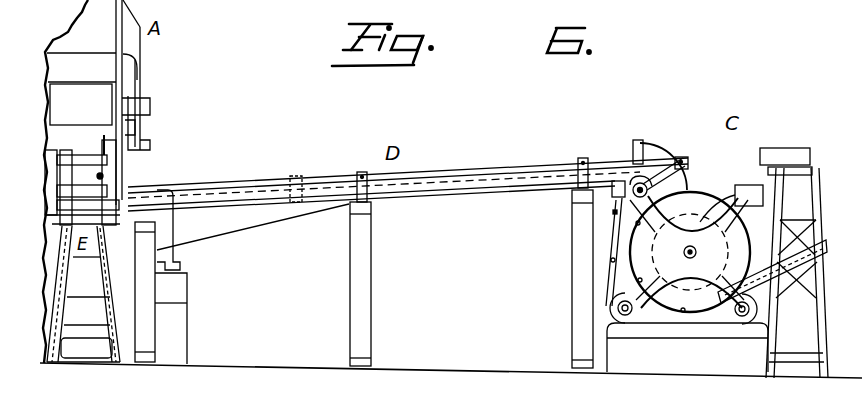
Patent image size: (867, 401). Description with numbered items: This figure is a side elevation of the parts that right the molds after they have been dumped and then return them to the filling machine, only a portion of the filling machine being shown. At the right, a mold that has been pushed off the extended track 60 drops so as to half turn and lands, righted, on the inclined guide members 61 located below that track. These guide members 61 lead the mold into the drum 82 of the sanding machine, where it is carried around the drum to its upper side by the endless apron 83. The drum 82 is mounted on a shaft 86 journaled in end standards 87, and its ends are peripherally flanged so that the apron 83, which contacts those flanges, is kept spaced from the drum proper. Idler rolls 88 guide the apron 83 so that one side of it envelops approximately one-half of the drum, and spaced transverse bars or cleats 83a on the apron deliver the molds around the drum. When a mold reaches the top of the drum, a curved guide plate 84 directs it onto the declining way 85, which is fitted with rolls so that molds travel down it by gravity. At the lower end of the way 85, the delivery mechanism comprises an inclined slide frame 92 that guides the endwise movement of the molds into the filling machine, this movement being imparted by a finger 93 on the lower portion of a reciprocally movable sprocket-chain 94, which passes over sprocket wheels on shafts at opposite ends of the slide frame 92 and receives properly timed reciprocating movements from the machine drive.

The track 60 is at (806, 182).
The inclined guide members 61 is at (778, 280).
The drum 82 is at (703, 208).
The endless apron 83 is at (615, 277).
The bars or cleats 83a is at (712, 333).
The curved guide plate 84 is at (673, 157).
The declining way 85 is at (485, 176).
The shaft 86 is at (690, 258).
The end standards 87 is at (668, 328).
The idler rolls 88 is at (624, 205).
The inclined slide frame 92 is at (118, 160).
The finger 93 is at (104, 186).
The sprocket-chain 94 is at (100, 140).